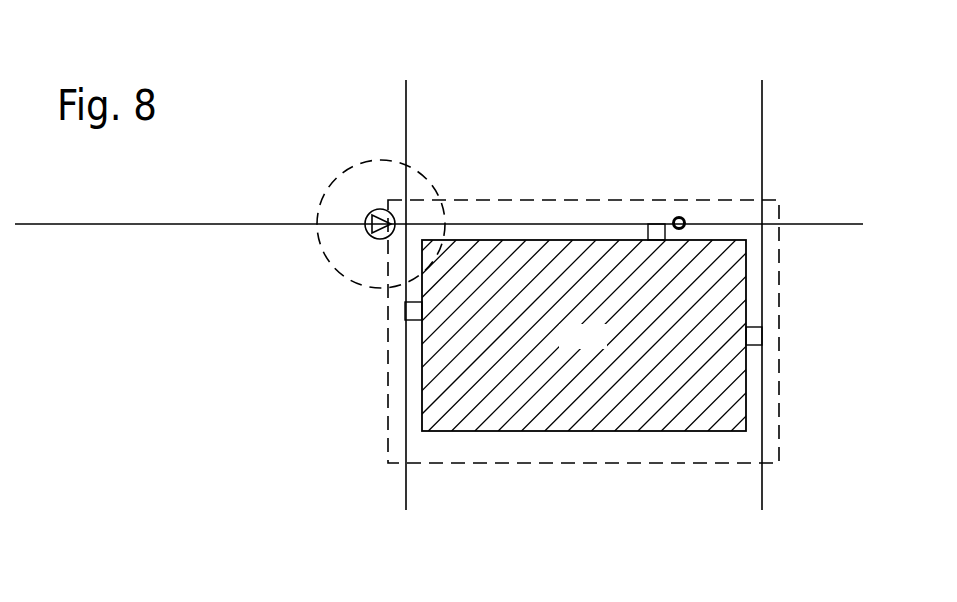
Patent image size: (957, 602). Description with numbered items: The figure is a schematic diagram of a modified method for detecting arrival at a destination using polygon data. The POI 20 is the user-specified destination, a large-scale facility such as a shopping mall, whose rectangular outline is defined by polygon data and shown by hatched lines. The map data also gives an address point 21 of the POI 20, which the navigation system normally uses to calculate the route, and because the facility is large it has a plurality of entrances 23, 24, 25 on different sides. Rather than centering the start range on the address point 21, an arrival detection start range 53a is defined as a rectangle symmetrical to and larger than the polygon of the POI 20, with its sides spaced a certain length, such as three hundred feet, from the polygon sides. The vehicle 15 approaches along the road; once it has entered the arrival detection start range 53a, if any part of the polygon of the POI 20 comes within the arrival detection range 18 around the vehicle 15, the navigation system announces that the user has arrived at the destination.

The vehicle 15 is at (373, 211).
The arrival detection range 18 is at (351, 166).
The POI 20 is at (600, 431).
The address point 21 is at (683, 218).
The entrance 23 is at (412, 314).
The entrance 24 is at (650, 223).
The entrance 25 is at (761, 332).
The arrival detection start range 53a is at (660, 463).